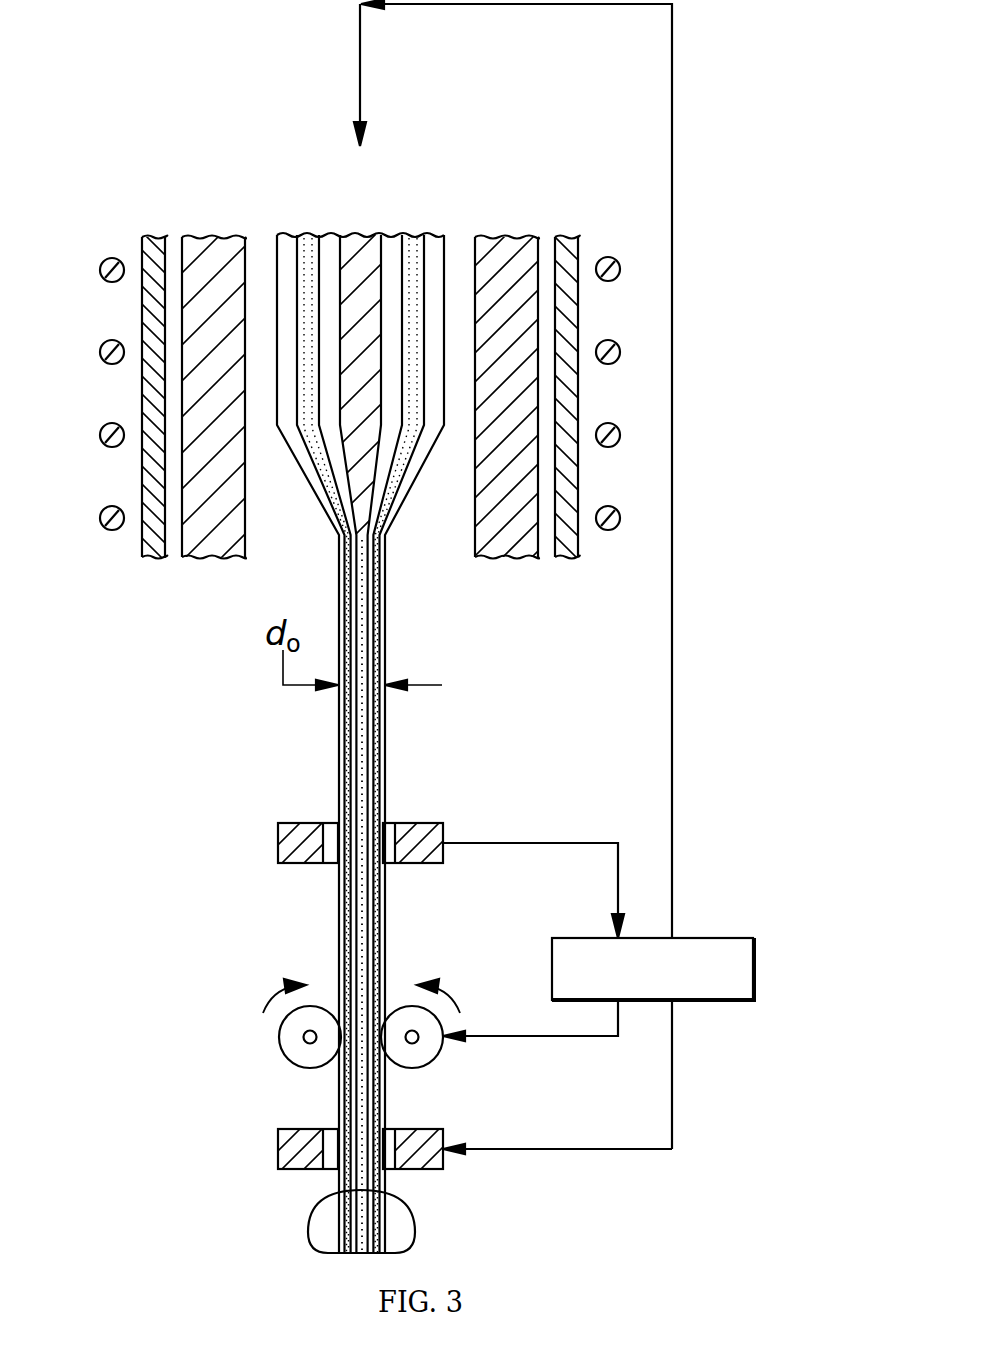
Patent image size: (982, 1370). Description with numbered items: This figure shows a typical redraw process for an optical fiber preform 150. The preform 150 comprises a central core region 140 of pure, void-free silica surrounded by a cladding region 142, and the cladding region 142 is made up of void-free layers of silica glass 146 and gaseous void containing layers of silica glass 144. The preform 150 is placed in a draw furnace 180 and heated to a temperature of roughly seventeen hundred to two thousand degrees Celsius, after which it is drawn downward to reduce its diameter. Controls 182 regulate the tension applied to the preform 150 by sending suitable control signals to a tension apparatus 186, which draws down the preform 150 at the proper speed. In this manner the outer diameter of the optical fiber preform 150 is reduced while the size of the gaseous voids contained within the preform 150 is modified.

The draw furnace 180 is at (155, 208).
The optical fiber preform 150 is at (299, 660).
The cladding region 142 is at (347, 223).
The core region 140 is at (355, 234).
The gaseous void containing layers of silica glass 144 is at (413, 234).
The void-free layers of silica glass 146 is at (403, 234).
The controls 182 is at (754, 970).
The tension apparatus 186 is at (230, 1055).